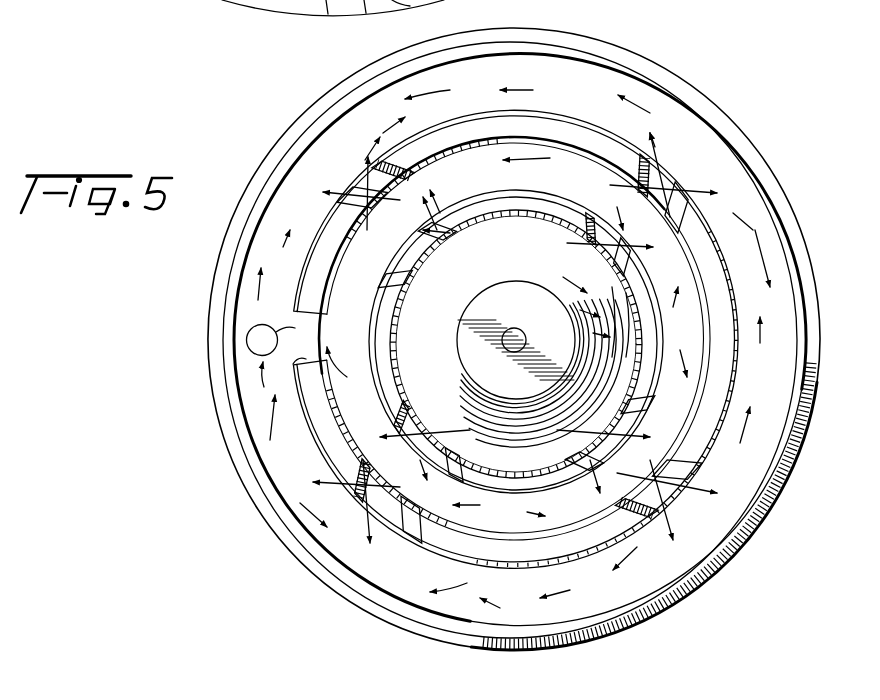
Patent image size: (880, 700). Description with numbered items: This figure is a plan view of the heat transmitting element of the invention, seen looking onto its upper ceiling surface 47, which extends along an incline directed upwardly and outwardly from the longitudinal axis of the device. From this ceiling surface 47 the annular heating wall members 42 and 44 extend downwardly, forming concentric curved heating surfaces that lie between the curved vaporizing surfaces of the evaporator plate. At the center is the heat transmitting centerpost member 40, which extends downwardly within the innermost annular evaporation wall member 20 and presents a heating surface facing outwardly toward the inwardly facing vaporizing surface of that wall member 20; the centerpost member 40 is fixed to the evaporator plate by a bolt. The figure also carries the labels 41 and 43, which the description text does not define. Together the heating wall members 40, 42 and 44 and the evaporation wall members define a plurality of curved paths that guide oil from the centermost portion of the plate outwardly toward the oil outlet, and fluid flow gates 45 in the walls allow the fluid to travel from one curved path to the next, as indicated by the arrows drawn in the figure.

The innermost annular evaporation wall member 20 is at (221, 1).
The heat transmitting centerpost member 40 is at (477, 310).
The volute passages 41 is at (553, 430).
The heating wall member 42 is at (543, 200).
The inlet nozzle 43 is at (308, 360).
The heating wall member 44 is at (720, 383).
The fluid flow gates 45 is at (362, 180).
The upper ceiling surface 47 is at (262, 244).